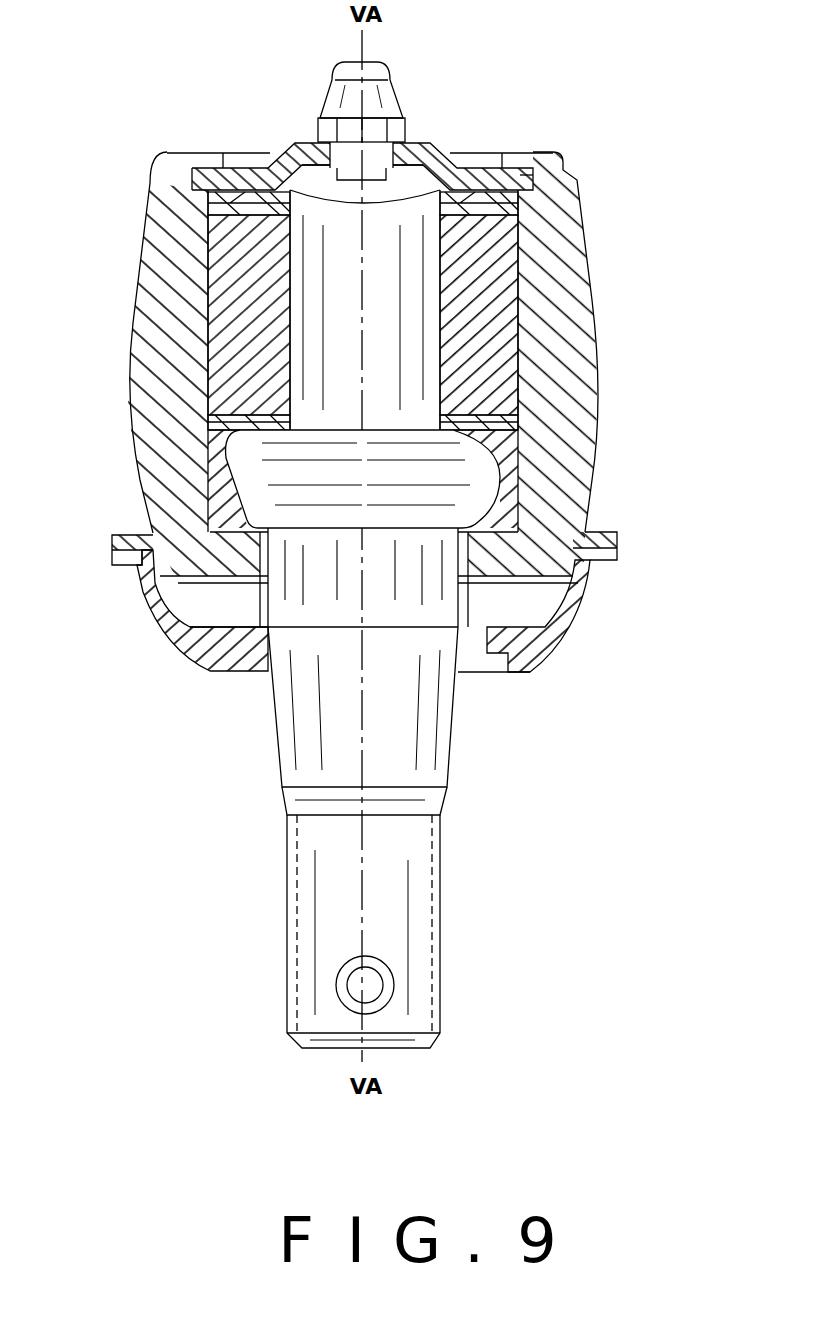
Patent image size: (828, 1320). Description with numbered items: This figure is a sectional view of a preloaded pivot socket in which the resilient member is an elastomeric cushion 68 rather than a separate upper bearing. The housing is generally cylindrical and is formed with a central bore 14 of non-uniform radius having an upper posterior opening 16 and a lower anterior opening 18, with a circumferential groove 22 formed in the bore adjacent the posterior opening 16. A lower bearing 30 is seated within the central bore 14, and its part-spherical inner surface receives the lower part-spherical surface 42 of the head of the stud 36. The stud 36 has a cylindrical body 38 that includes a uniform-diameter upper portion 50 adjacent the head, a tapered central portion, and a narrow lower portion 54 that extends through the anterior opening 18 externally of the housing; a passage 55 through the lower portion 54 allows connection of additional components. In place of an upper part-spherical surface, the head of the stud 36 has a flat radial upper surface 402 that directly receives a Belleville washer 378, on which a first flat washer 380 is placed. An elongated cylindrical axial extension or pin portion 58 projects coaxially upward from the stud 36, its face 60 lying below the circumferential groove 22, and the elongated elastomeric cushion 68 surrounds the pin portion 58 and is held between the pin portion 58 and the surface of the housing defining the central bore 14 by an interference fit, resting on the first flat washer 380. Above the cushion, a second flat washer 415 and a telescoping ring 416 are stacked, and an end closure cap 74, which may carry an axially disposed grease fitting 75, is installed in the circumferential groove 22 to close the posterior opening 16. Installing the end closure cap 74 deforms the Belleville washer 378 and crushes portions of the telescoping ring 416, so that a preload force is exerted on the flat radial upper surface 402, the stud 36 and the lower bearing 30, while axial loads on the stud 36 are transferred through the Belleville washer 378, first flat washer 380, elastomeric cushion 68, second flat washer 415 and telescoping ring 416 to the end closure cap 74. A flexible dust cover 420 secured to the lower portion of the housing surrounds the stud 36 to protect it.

The central bore 14 is at (515, 443).
The posterior opening 16 is at (477, 165).
The anterior opening 18 is at (180, 660).
The circumferential groove 22 is at (185, 181).
The lower bearing 30 is at (233, 532).
The stud 36 is at (433, 657).
The cylindrical body 38 is at (430, 748).
The lower part-spherical surface 42 is at (452, 500).
The upper portion 50 is at (297, 617).
The lower portion 54 is at (443, 925).
The passage 55 is at (373, 985).
The pin portion 58 is at (407, 225).
The face 60 is at (297, 143).
The elastomeric cushion 68 is at (502, 335).
The end closure cap 74 is at (520, 172).
The grease fitting 75 is at (410, 62).
The Belleville washer 378 is at (507, 440).
The first flat washer 380 is at (247, 410).
The flat radial upper surface 402 is at (452, 436).
The second flat washer 415 is at (495, 213).
The telescoping ring 416 is at (240, 200).
The dust cover 420 is at (590, 612).